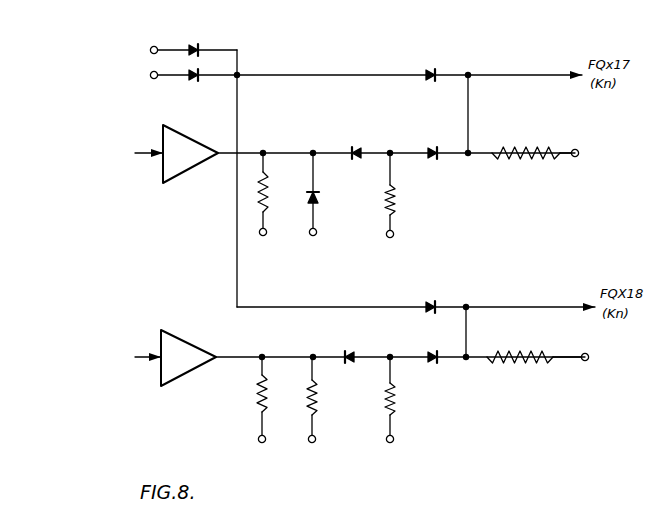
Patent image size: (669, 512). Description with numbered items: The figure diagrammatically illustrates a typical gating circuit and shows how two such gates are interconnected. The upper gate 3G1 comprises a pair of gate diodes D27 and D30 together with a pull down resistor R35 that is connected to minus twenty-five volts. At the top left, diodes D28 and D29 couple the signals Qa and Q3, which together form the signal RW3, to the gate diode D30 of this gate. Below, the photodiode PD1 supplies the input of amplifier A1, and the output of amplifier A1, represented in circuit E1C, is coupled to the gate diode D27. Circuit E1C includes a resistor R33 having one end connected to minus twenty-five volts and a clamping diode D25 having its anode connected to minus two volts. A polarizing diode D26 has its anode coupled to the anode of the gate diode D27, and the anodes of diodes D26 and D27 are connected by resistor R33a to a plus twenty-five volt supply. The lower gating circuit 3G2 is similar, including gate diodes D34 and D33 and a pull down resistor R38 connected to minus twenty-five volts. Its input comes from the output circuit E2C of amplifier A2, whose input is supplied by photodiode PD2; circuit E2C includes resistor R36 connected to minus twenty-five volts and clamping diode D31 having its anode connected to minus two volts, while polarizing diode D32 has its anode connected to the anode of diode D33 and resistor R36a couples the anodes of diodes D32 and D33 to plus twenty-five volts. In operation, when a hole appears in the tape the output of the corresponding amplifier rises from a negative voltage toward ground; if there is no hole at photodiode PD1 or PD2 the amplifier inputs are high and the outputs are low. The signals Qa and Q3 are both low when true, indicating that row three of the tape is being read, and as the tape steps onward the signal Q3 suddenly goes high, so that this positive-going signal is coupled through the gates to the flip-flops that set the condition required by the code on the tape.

The signal RW3 is at (117, 32).
The signal Qa is at (180, 50).
The signal Q3 is at (352, 76).
The diode D28 is at (204, 40).
The diode D29 is at (200, 85).
The gate diode D30 is at (435, 69).
The gate 3G1 is at (382, 53).
The photodiode PD1 is at (68, 122).
The amplifier A1 is at (211, 148).
The output circuit of amplifier A1 E1C is at (250, 153).
The resistor R33 is at (258, 195).
The clamping diode D25 is at (319, 193).
The polarizing diode D26 is at (362, 141).
The gate diode D27 is at (430, 148).
The resistor R33a is at (396, 197).
The pull down resistor R35 is at (522, 143).
The gating circuit 3G2 is at (374, 300).
The gate diode D34 is at (435, 302).
The photodiode PD2 is at (66, 325).
The amplifier A2 is at (206, 349).
The output circuit of amplifier A2 E2C is at (400, 345).
The resistor R36 is at (260, 411).
The clamping diode D31 is at (318, 395).
The polarizing diode D32 is at (353, 350).
The gate diode D33 is at (431, 368).
The resistor R36a is at (389, 414).
The pull down resistor R38 is at (520, 348).